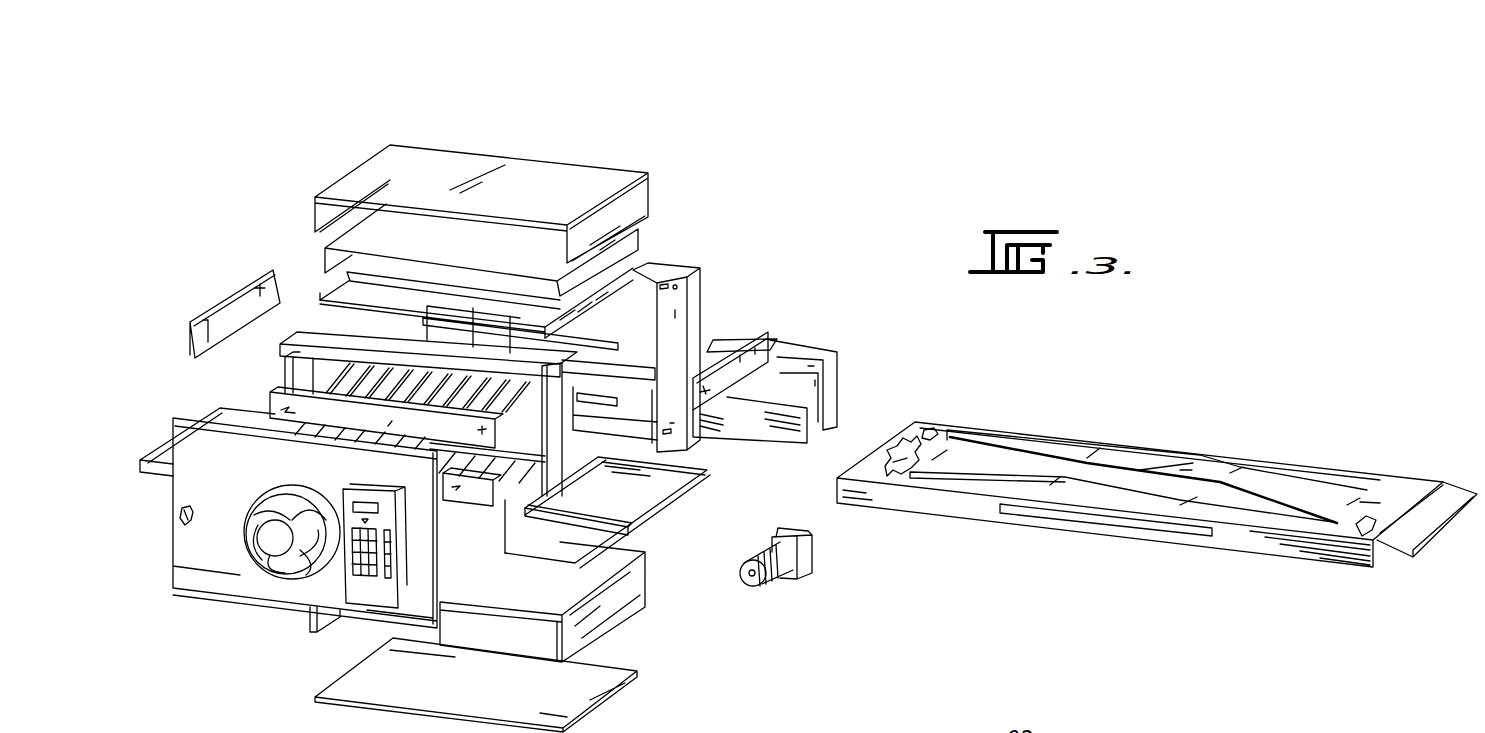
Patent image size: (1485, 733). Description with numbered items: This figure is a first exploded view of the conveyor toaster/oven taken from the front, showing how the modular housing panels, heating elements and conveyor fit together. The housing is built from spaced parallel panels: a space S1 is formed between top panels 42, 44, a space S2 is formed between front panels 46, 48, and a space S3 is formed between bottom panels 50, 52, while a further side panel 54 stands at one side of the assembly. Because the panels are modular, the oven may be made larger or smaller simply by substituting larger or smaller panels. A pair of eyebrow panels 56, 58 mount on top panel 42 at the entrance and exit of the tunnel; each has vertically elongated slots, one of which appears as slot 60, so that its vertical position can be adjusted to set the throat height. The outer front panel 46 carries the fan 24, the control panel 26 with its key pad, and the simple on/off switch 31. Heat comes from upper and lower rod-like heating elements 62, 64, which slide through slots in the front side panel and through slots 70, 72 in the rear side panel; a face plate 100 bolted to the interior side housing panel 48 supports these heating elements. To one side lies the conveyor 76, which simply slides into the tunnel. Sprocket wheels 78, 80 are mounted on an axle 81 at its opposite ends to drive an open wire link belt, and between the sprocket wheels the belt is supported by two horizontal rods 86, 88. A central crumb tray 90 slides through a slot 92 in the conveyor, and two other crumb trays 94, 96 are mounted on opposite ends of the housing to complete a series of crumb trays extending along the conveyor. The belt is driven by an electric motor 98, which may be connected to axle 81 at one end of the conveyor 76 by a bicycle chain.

The fan 24 is at (267, 543).
The control panel 26 is at (350, 583).
The switch 31 is at (184, 528).
The top panel 42 is at (573, 177).
The top panel 44 is at (482, 238).
The front panel 46 is at (227, 476).
The front panel 48 is at (515, 500).
The bottom panel 50 is at (633, 593).
The bottom panel 52 is at (477, 709).
The panel 54 is at (632, 320).
The eyebrow panel 56 is at (238, 305).
The eyebrow panel 58 is at (740, 360).
The slot 60 is at (218, 325).
The upper heating element 62 is at (337, 368).
The lower heating element 64 is at (548, 468).
The slot 70 is at (523, 330).
The slot 72 is at (600, 396).
The conveyor 76 is at (1120, 440).
The sprocket wheel 78 is at (897, 440).
The sprocket wheel 80 is at (1390, 508).
The axle 81 is at (929, 432).
The horizontal rod 86 is at (1003, 447).
The horizontal rod 88 is at (1012, 473).
The central crumb tray 90 is at (1190, 468).
The slot 92 is at (1167, 530).
The crumb tray 94 is at (153, 467).
The crumb tray 96 is at (683, 477).
The electric motor 98 is at (797, 579).
The face plate 100 is at (270, 398).
The space S1 is at (410, 220).
The space S2 is at (396, 377).
The space S3 is at (508, 668).